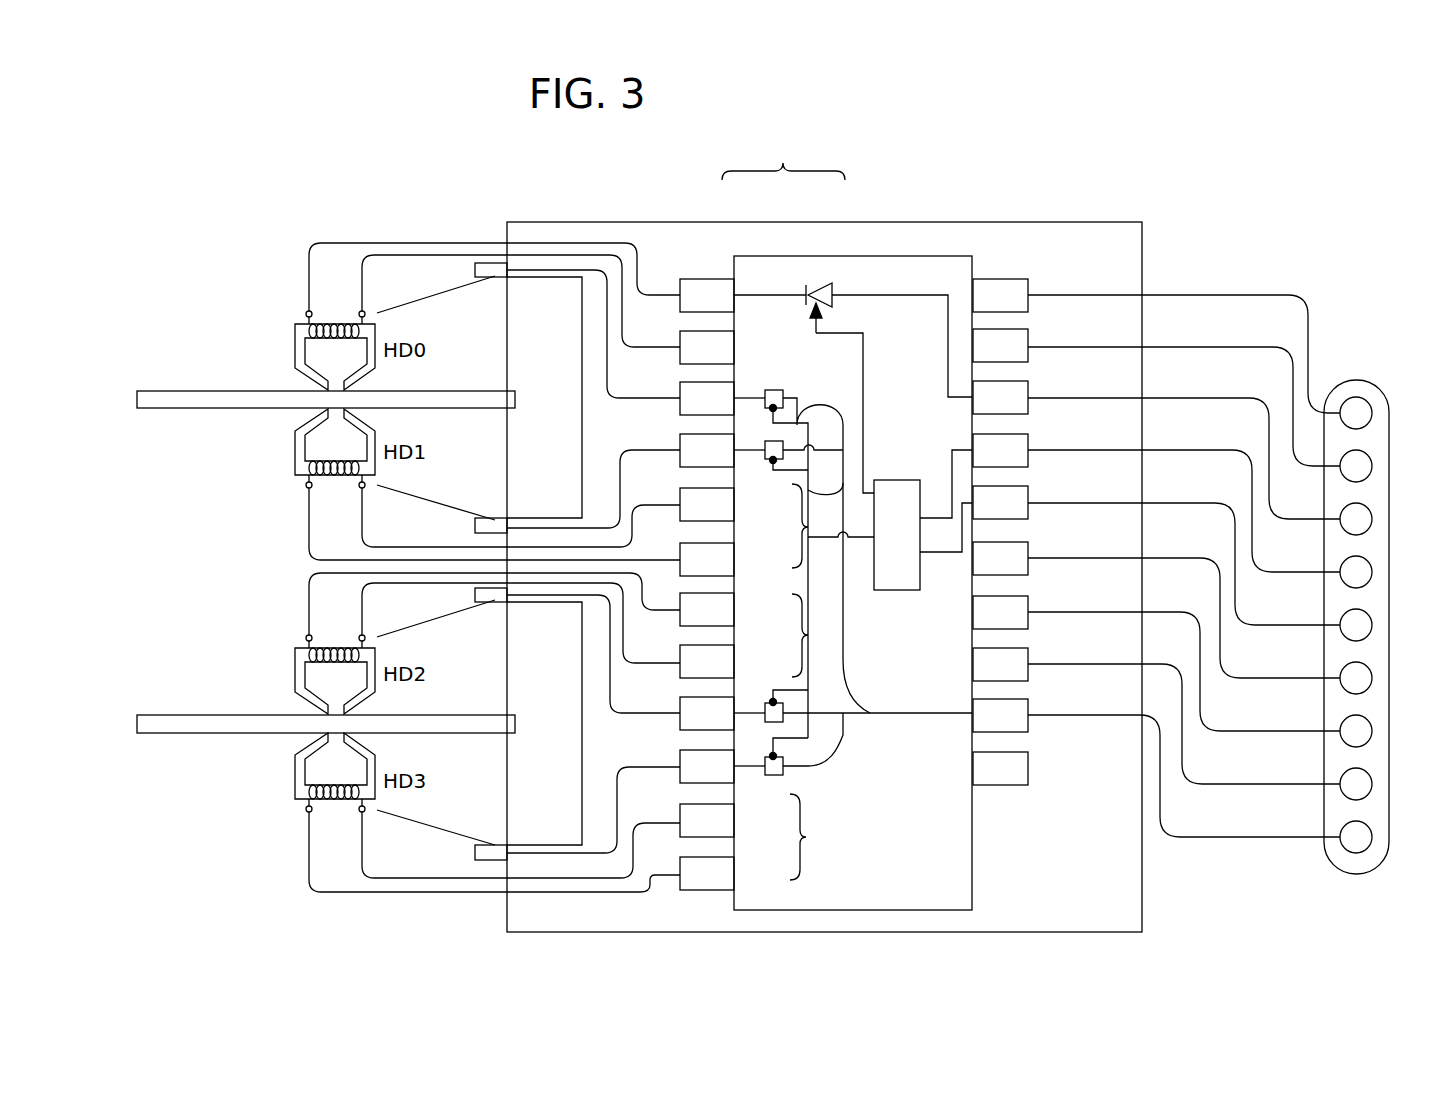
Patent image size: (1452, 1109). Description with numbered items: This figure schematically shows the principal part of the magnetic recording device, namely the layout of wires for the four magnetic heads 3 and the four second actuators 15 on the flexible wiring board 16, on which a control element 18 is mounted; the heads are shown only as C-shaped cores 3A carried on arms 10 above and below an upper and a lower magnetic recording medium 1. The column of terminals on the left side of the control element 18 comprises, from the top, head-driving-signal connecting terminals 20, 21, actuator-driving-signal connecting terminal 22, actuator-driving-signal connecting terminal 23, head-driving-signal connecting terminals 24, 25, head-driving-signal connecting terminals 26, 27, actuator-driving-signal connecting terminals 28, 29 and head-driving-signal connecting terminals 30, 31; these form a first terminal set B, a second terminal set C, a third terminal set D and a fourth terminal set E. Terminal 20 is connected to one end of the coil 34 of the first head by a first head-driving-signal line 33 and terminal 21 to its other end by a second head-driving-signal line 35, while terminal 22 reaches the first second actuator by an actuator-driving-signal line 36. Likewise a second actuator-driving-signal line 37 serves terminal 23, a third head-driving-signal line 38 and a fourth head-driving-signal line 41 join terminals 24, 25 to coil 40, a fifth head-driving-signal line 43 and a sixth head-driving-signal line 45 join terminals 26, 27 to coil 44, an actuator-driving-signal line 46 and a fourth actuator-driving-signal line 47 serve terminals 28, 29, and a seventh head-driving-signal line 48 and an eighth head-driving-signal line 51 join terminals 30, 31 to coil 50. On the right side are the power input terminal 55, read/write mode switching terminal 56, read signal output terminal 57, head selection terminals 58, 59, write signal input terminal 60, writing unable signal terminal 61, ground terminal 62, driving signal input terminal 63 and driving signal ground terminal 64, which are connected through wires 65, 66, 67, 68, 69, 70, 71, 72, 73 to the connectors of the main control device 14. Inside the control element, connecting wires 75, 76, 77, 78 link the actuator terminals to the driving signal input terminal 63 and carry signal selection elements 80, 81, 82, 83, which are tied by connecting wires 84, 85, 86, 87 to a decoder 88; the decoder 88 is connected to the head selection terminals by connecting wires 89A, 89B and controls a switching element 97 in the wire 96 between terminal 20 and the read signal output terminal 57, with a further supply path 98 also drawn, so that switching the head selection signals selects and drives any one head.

The magnetic recording medium 1 is at (165, 392).
The magnetic head 3 is at (290, 552).
The C-shaped core 3A is at (296, 352).
The head arm 10 is at (447, 296).
The main control device 14 is at (1351, 372).
The second actuator 15 is at (497, 285).
The flexible wiring board 16 is at (1130, 893).
The control element 18 is at (922, 256).
The first head-driving-signal connecting terminal 20 is at (740, 285).
The second head-driving-signal connecting terminal 21 is at (737, 340).
The first actuator-driving-signal connecting terminal 22 is at (737, 388).
The second actuator-driving-signal connecting terminal 23 is at (737, 468).
The third head-driving-signal connecting terminal 24 is at (737, 508).
The fourth head-driving-signal connecting terminal 25 is at (737, 557).
The fifth head-driving-signal connecting terminal 26 is at (737, 600).
The sixth head-driving-signal connecting terminal 27 is at (737, 660).
The third actuator-driving-signal connecting terminal 28 is at (737, 700).
The fourth actuator-driving-signal connecting terminal 29 is at (737, 783).
The seventh head-driving-signal connecting terminal 30 is at (737, 823).
The eighth head-driving-signal connecting terminal 31 is at (737, 871).
The first head-driving-signal line 33 is at (372, 243).
The coil 34 is at (333, 322).
The second head-driving-signal line 35 is at (376, 257).
The actuator-driving-signal line 36 is at (612, 373).
The second actuator-driving-signal line 37 is at (612, 485).
The third head-driving-signal line 38 is at (367, 542).
The coil 40 is at (334, 478).
The fourth head-driving-signal line 41 is at (307, 530).
The fifth head-driving-signal line 43 is at (307, 610).
The coil 44 is at (333, 646).
The sixth head-driving-signal line 45 is at (367, 606).
The actuator-driving-signal line 46 is at (612, 690).
The fourth actuator-driving-signal line 47 is at (612, 798).
The seventh head-driving-signal line 48 is at (367, 873).
The coil 50 is at (334, 802).
The eighth head-driving-signal line 51 is at (307, 861).
The power input terminal 55 is at (1028, 307).
The read/write mode switching terminal 56 is at (1028, 357).
The read signal output terminal 57 is at (1028, 409).
The head selection terminal 58 is at (1028, 462).
The head selection terminal 59 is at (1028, 514).
The write signal input terminal 60 is at (1028, 570).
The writing unable signal terminal 61 is at (1028, 624).
The ground terminal 62 is at (1028, 676).
The driving signal input terminal 63 is at (1028, 727).
The driving signal ground terminal 64 is at (1028, 780).
The wire 65 is at (1202, 294).
The wire 66 is at (1202, 346).
The wire 67 is at (1202, 397).
The wire 68 is at (1202, 449).
The wire 69 is at (1293, 624).
The wire 70 is at (1293, 677).
The wire 71 is at (1293, 730).
The wire 72 is at (1293, 783).
The wire 73 is at (1293, 836).
The connecting wire 75 is at (830, 710).
The connecting wire 76 is at (830, 440).
The connecting wire 77 is at (846, 712).
The connecting wire 78 is at (845, 722).
The signal selection element 80 is at (774, 390).
The signal selection element 81 is at (755, 425).
The signal selection element 82 is at (772, 724).
The signal selection element 83 is at (784, 772).
The connecting wire 84 is at (814, 400).
The connecting wire 85 is at (845, 452).
The connecting wire 86 is at (866, 598).
The connecting wire 87 is at (845, 750).
The decoder 88 is at (906, 480).
The connecting wire 89A is at (940, 450).
The connecting wire 89B is at (942, 565).
The wire 96 is at (890, 297).
The switching element 97 is at (836, 288).
The supply line 98 is at (864, 342).
The first terminal set B is at (783, 157).
The second terminal set C is at (812, 526).
The third terminal set D is at (813, 635).
The fourth terminal set E is at (808, 837).